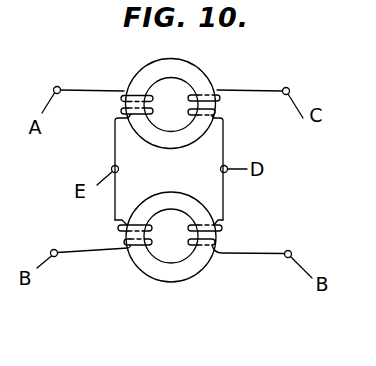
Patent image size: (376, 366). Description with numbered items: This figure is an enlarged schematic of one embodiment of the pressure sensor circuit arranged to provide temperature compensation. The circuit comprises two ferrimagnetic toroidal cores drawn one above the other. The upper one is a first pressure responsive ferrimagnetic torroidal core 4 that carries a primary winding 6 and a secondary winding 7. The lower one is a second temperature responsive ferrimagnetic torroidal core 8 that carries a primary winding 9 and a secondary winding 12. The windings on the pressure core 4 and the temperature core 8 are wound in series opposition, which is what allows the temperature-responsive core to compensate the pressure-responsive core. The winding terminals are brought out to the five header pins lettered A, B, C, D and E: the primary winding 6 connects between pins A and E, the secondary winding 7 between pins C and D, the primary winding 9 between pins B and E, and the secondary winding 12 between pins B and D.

The first pressure responsive ferrimagnetic torroidal core 4 is at (190, 75).
The primary winding 6 is at (137, 93).
The secondary winding 7 is at (203, 86).
The second temperature responsive ferrimagnetic torroidal core 8 is at (173, 275).
The primary winding 9 is at (137, 253).
The secondary winding 12 is at (220, 230).